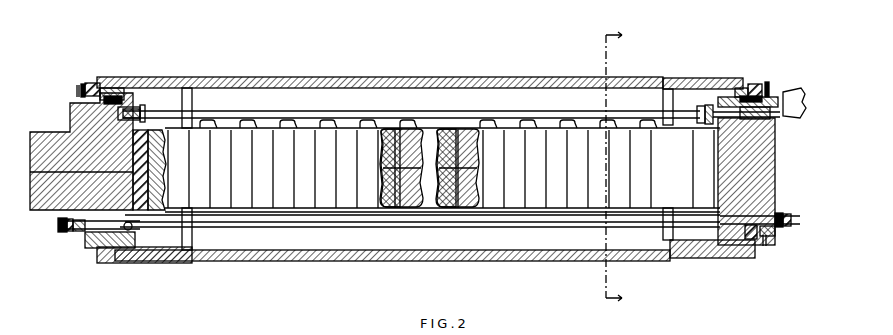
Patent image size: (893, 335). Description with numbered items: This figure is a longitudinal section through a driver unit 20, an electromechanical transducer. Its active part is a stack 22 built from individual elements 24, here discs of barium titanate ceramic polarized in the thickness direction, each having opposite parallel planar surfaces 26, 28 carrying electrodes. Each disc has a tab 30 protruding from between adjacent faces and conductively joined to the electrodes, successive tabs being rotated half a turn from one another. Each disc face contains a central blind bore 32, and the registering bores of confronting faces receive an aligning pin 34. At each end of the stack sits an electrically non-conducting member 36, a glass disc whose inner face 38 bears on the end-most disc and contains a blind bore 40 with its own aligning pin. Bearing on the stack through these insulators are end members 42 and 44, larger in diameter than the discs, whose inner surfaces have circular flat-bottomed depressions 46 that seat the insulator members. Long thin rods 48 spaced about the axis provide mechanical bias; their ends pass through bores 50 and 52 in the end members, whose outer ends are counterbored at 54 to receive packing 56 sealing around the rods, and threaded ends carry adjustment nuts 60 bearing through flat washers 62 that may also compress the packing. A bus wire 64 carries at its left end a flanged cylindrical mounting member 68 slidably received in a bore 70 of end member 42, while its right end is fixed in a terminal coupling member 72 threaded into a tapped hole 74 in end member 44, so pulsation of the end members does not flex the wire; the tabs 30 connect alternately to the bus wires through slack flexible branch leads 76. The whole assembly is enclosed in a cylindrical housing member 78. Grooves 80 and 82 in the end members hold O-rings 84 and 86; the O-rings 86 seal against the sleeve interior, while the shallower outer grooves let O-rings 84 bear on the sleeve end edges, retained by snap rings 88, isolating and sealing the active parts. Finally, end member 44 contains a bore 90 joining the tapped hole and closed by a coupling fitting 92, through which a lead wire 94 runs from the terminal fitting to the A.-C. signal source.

The driver unit 20 is at (422, 76).
The stack 22 is at (222, 126).
The elements 24 is at (584, 200).
The planar surface 26 is at (342, 215).
The planar surface 28 is at (383, 200).
The tab 30 is at (356, 130).
The blind bore 32 is at (470, 180).
The aligning pin 34 is at (402, 190).
The electrically non-conducting member 36 is at (165, 214).
The inner face 38 is at (150, 170).
The blind bore 40 is at (162, 160).
The end member 42 is at (78, 148).
The end member 44 is at (748, 240).
The circular flat-bottomed depression 46 is at (160, 180).
The rod 48 is at (460, 222).
The bore 50 is at (122, 250).
The bore 52 is at (722, 190).
The counterbore 54 is at (60, 222).
The packing 56 is at (78, 236).
The adjustment nut 60 is at (62, 236).
The flat washer 62 is at (70, 236).
The bus wire 64 is at (475, 112).
The flanged cylindrical mounting member 68 is at (146, 112).
The bore 70 is at (135, 112).
The terminal coupling member 72 is at (700, 108).
The tapped hole 74 is at (708, 110).
The branch lead 76 is at (287, 128).
The cylindrical housing member 78 is at (557, 76).
The groove 80 is at (93, 84).
The groove 82 is at (110, 90).
The O-ring 84 is at (83, 88).
The O-ring 86 is at (116, 97).
The snap ring 88 is at (78, 91).
The bore 90 is at (748, 171).
The coupling fitting 92 is at (792, 98).
The lead wire 94 is at (765, 117).